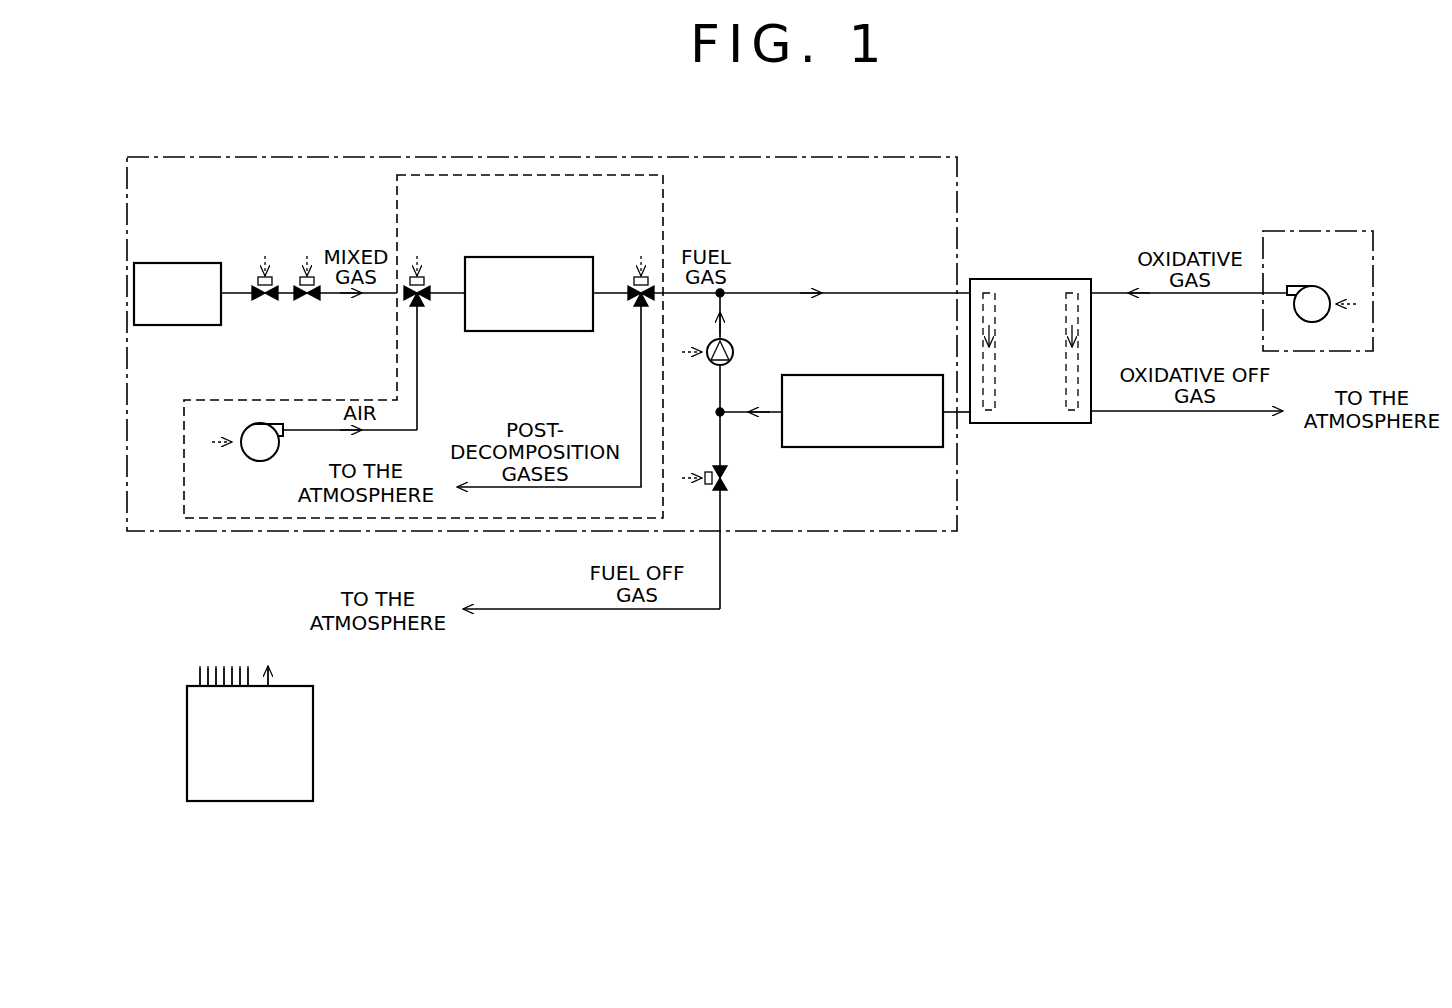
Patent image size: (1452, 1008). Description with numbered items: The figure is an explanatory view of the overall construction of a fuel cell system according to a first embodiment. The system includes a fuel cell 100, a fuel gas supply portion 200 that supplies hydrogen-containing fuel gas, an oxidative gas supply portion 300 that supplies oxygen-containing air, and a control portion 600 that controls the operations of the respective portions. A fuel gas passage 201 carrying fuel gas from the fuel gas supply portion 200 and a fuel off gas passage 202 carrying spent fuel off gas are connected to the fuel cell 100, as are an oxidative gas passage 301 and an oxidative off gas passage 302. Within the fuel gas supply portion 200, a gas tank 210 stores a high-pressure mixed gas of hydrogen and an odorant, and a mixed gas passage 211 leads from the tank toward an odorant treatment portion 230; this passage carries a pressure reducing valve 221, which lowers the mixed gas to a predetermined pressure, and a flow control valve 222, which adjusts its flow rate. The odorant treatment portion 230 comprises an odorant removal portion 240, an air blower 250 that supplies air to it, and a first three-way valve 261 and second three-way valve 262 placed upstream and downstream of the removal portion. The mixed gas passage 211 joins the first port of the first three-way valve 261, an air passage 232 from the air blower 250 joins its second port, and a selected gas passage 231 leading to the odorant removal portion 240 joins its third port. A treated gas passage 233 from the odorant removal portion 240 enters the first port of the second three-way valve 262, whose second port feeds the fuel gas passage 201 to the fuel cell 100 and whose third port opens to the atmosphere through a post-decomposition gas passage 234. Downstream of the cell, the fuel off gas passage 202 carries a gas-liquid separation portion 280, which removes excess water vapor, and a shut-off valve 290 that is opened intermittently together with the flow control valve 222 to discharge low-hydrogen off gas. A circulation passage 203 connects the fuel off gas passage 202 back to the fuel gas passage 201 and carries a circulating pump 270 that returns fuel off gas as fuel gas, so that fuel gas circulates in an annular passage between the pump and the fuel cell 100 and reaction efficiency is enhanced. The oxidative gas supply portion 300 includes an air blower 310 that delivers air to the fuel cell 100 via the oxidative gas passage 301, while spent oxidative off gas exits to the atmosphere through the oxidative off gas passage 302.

The fuel cell 100 is at (1030, 279).
The fuel gas supply portion 200 is at (413, 157).
The fuel gas passage 201 is at (918, 293).
The fuel off gas passage 202 is at (688, 609).
The circulation passage 203 is at (721, 385).
The gas tank 210 is at (178, 263).
The mixed gas passage 211 is at (236, 293).
The pressure reducing valve 221 is at (262, 302).
The flow control valve 222 is at (305, 302).
The odorant treatment portion 230 is at (397, 198).
The selected gas passage 231 is at (448, 293).
The air passage 232 is at (417, 396).
The treated gas passage 233 is at (612, 293).
The post-decomposition gas passage 234 is at (641, 396).
The odorant removal portion 240 is at (528, 257).
The air blower 250 is at (248, 458).
The first three-way valve 261 is at (436, 302).
The second three-way valve 262 is at (626, 302).
The circulating pump 270 is at (732, 348).
The gas-liquid separation portion 280 is at (905, 375).
The shut-off valve 290 is at (730, 478).
The oxidative gas supply portion 300 is at (1316, 231).
The oxidative gas passage 301 is at (1108, 293).
The oxidative off gas passage 302 is at (1110, 411).
The air blower 310 is at (1304, 290).
The control portion 600 is at (313, 746).